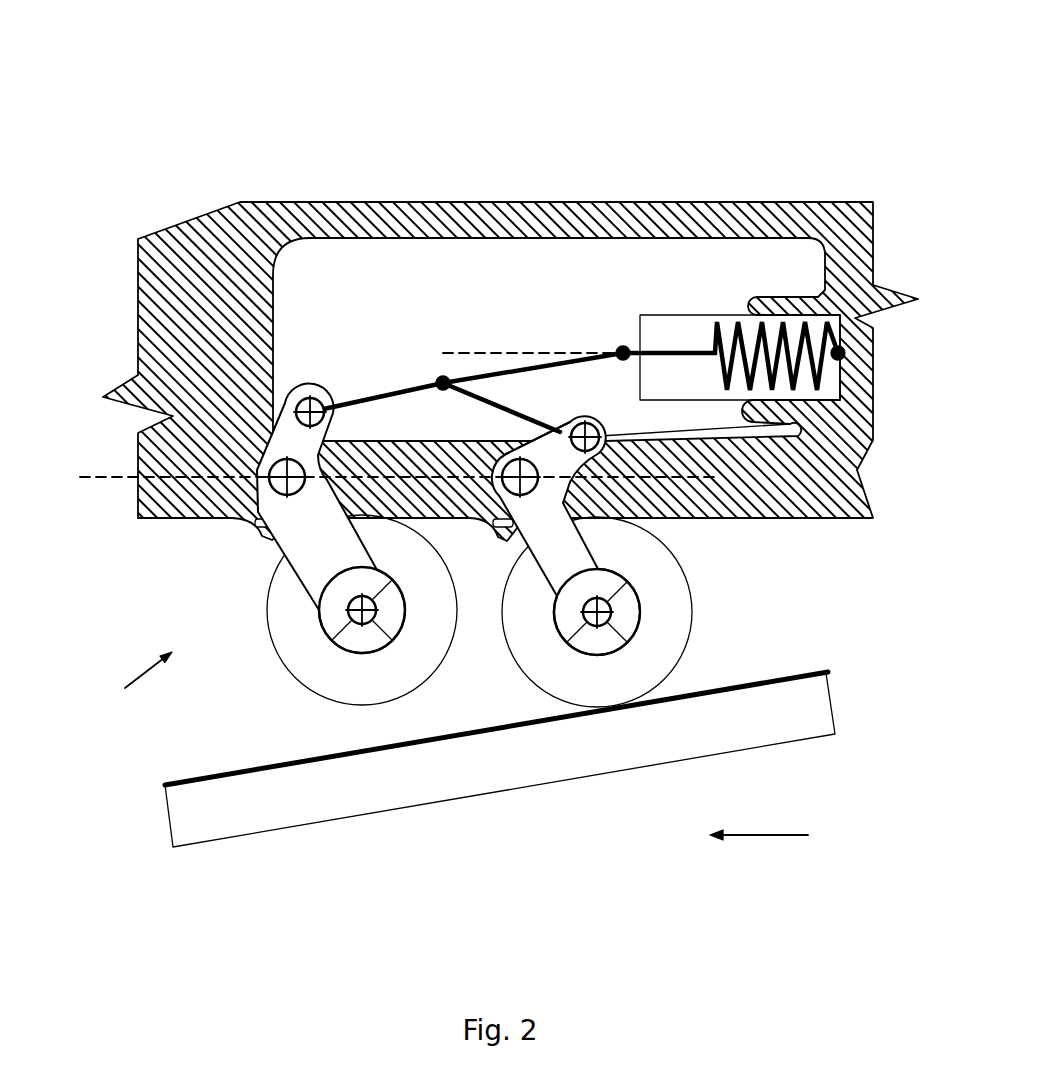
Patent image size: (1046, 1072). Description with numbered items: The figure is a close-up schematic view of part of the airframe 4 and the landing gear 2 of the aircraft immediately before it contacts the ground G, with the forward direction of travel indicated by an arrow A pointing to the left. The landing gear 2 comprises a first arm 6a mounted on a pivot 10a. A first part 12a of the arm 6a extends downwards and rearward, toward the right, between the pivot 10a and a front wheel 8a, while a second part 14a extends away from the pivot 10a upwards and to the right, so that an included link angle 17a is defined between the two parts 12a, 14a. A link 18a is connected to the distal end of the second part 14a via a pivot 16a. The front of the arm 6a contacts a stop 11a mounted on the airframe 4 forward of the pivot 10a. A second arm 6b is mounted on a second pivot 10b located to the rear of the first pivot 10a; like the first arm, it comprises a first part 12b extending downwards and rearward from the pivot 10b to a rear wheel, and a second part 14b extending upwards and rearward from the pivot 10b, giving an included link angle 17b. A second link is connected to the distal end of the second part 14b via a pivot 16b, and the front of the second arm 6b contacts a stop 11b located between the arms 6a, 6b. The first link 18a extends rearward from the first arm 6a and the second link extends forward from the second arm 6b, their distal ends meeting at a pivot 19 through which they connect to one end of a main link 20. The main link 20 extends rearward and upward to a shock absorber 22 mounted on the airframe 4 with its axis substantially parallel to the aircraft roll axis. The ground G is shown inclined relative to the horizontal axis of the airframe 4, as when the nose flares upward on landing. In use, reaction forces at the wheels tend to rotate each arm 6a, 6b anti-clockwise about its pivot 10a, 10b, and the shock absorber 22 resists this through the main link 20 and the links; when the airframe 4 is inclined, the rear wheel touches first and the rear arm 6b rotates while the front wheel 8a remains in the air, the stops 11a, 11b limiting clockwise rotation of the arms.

The landing gear 2 is at (136, 681).
The airframe 4 is at (263, 204).
The first arm 6a is at (307, 527).
The second arm 6b is at (545, 531).
The front wheel 8a is at (323, 663).
The pivot 10a is at (262, 523).
The second pivot 10b is at (545, 425).
The stop 11a is at (313, 527).
The stop 11b is at (548, 543).
The first part 12a is at (325, 567).
The first part 12b is at (573, 587).
The second part 14a is at (297, 450).
The second part 14b is at (585, 527).
The pivot 16a is at (298, 397).
The pivot 16b is at (597, 432).
The included link angle 17a is at (346, 414).
The included link angle 17b is at (707, 515).
The first link 18a is at (352, 448).
The pivot 19 is at (443, 383).
The main link 20 is at (500, 407).
The shock absorber 22 is at (748, 345).
The ground G is at (810, 700).
The arrow A is at (759, 855).